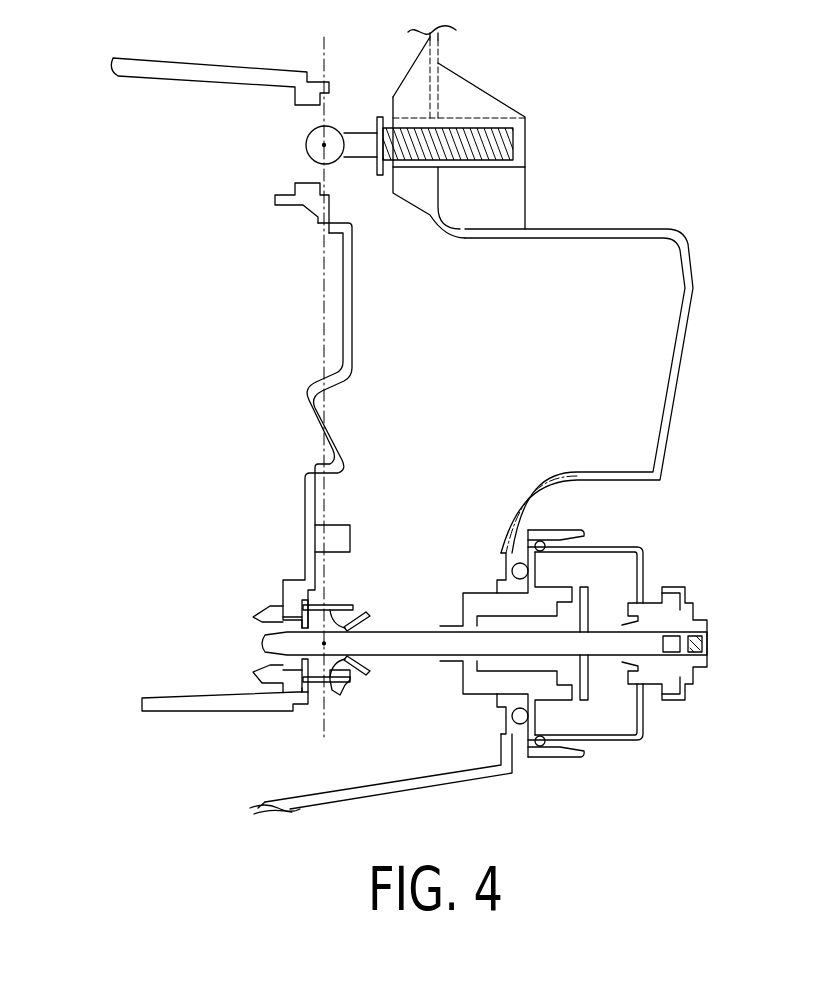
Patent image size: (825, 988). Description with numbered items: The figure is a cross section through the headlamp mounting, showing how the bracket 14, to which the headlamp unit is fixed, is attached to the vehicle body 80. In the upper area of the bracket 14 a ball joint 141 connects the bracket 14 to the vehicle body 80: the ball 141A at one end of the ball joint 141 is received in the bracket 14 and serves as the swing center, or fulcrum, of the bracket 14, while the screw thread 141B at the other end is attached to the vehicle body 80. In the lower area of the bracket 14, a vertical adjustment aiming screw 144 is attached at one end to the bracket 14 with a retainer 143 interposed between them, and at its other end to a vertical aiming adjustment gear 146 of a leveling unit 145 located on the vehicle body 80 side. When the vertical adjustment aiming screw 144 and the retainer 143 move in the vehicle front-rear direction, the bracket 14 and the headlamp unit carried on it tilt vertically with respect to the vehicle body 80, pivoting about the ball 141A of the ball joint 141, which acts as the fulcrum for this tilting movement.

The bracket 14 is at (310, 417).
The vehicle body 80 is at (692, 316).
The ball joint 141 is at (355, 131).
The ball 141A is at (321, 146).
The screw thread 141B is at (473, 150).
The retainer 143 is at (343, 696).
The vertical adjustment aiming screw 144 is at (262, 644).
The leveling unit 145 is at (608, 747).
The vertical aiming adjustment gear 146 is at (680, 705).